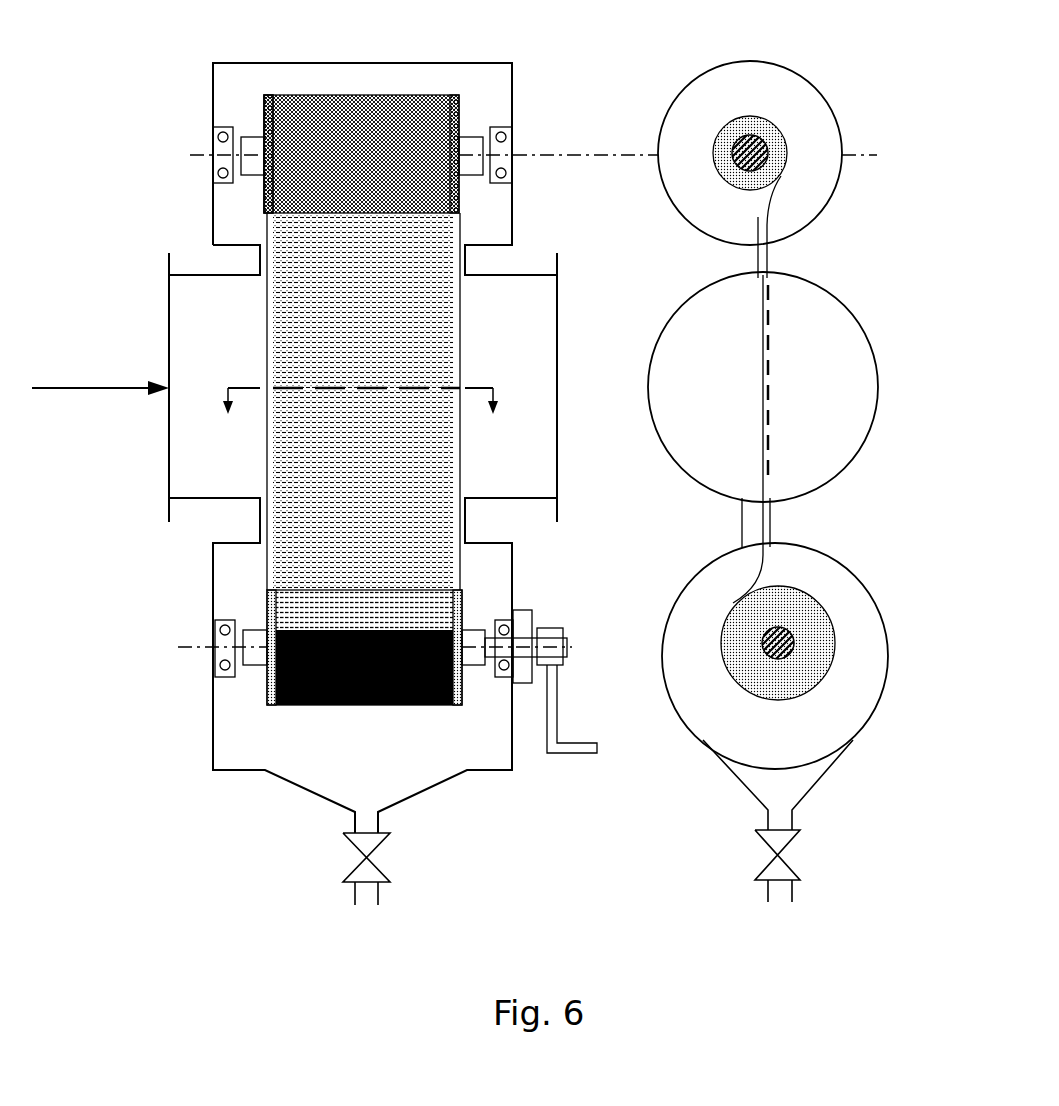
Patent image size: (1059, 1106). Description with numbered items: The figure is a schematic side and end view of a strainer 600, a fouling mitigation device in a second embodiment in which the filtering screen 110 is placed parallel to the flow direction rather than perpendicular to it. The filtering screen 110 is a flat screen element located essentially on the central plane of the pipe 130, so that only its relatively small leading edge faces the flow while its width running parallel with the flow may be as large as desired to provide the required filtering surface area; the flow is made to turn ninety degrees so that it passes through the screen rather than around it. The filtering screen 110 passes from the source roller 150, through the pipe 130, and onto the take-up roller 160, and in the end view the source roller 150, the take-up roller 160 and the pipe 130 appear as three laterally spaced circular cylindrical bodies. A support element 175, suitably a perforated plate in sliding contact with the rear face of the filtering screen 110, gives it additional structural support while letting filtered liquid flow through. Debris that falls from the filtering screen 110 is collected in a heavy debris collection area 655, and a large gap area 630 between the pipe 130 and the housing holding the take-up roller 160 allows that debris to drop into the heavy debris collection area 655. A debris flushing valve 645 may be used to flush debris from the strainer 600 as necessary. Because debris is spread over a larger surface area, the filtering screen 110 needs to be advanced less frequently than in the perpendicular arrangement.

The strainer 600 is at (557, 68).
The filtering screen 110 is at (283, 345).
The pipe 130 is at (833, 478).
The source roller 150 is at (253, 140).
The take-up roller 160 is at (778, 645).
The support element 175 is at (770, 332).
The large gap area 630 is at (753, 518).
The debris flushing valve 645 is at (350, 859).
The heavy debris collection area 655 is at (363, 777).